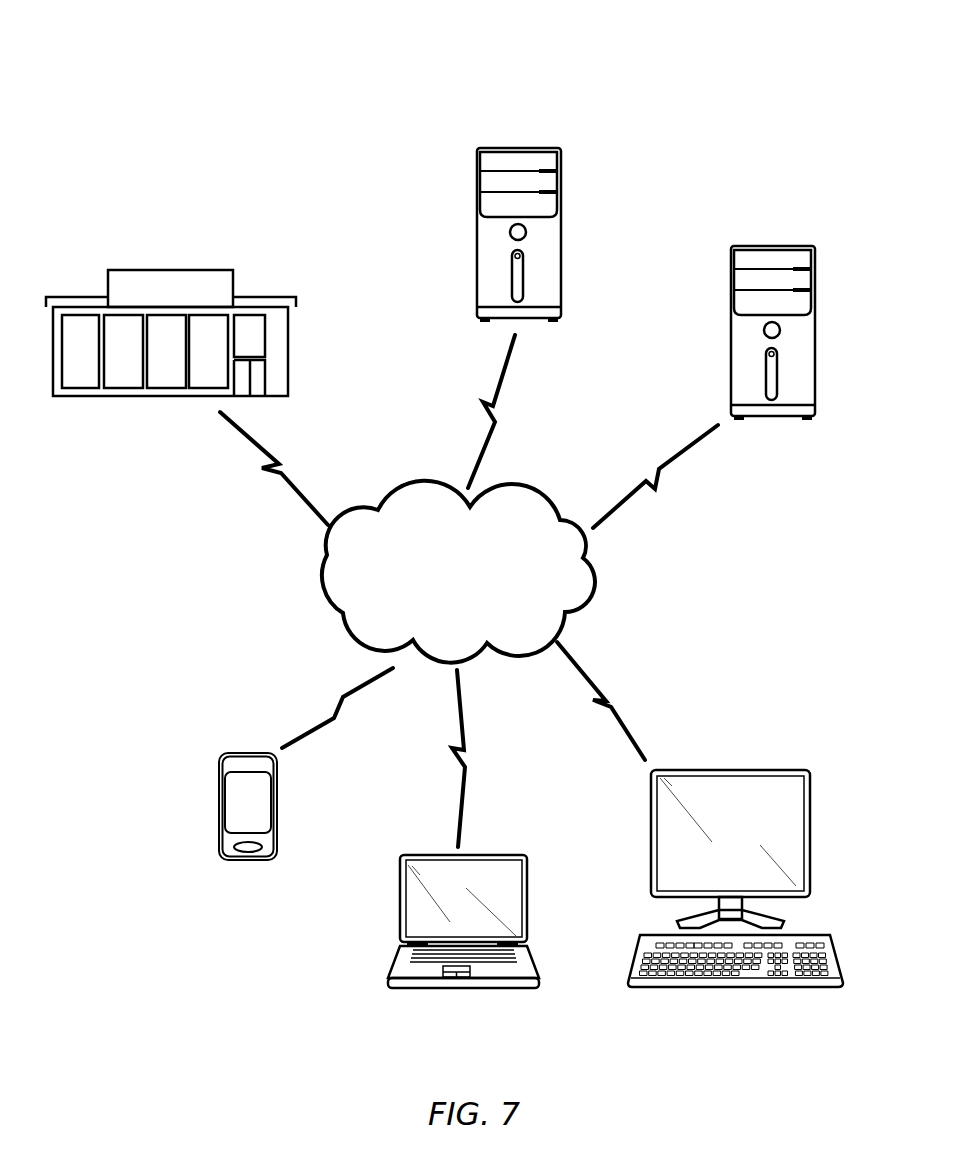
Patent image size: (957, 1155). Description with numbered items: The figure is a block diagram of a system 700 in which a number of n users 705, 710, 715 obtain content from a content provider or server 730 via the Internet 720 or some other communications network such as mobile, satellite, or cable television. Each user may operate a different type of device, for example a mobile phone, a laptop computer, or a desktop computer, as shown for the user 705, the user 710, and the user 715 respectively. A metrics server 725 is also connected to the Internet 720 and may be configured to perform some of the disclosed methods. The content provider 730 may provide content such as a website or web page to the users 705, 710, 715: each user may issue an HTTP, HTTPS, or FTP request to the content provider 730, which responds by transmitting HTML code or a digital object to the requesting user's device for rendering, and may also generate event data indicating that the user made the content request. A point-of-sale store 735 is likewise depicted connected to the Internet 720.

The system 700 is at (275, 69).
The user 1 mobile device 705 is at (253, 832).
The user 2 laptop computer 710 is at (463, 951).
The user n desktop computer 715 is at (735, 905).
The Internet 720 is at (442, 595).
The metrics server 725 is at (516, 210).
The content provider 730 is at (772, 306).
The point of sale (POS) store 735 is at (171, 362).